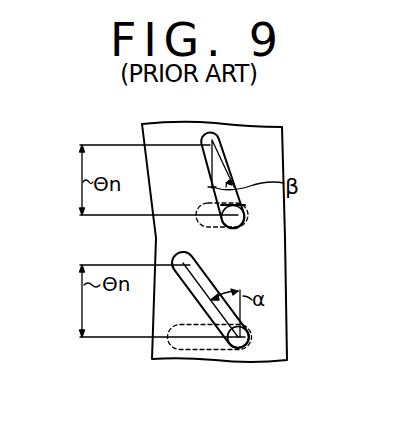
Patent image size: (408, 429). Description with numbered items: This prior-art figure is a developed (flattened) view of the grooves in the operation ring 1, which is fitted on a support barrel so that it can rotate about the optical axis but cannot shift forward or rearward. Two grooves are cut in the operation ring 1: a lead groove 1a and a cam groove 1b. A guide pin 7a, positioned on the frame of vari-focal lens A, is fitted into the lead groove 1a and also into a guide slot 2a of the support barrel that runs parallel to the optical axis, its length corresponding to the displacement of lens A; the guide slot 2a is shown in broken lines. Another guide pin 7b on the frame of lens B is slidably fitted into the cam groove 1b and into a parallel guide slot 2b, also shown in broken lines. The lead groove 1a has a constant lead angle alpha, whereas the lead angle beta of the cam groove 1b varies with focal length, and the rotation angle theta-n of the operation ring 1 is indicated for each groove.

The operation ring 1 is at (269, 133).
The lead groove 1a is at (202, 278).
The cam groove 1b is at (222, 131).
The guide slot 2a is at (168, 328).
The guide slot 2b is at (202, 203).
The guide pin 7a is at (250, 333).
The guide pin 7b is at (246, 215).